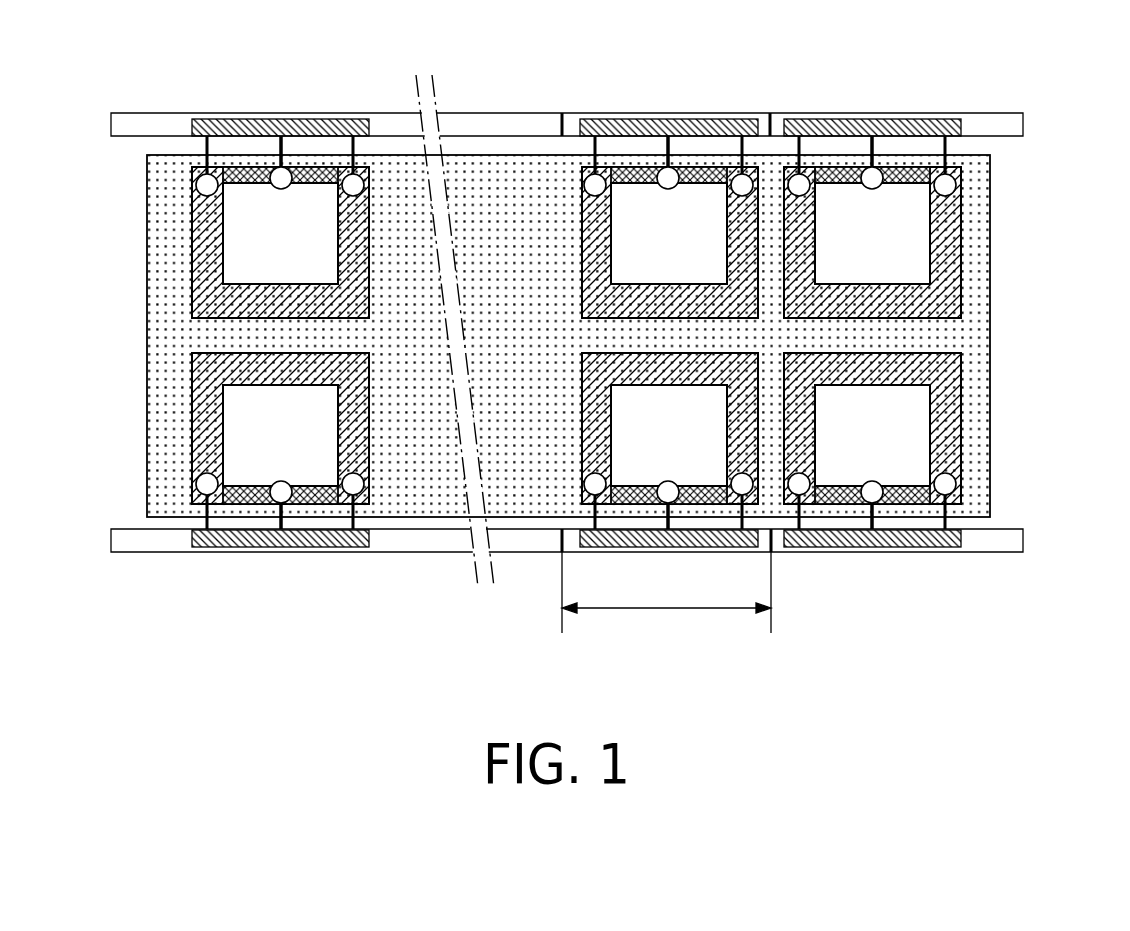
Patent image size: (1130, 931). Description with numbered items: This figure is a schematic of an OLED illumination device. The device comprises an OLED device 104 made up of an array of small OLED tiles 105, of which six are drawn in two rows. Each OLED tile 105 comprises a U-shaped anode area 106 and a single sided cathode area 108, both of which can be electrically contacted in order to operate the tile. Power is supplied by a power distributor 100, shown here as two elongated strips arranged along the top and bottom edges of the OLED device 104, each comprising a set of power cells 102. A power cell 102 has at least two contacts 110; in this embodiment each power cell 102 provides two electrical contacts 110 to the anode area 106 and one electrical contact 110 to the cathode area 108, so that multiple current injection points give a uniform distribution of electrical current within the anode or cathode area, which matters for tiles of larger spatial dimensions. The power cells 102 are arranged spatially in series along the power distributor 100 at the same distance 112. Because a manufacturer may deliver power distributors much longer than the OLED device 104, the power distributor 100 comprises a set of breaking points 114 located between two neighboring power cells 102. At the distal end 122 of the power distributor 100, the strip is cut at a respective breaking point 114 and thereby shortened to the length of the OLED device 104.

The power distributor 100 is at (1023, 127).
The power cell 102 is at (262, 120).
The OLED device 104 is at (990, 333).
The OLED tile 105 is at (157, 263).
The anode area 106 is at (952, 253).
The cathode area 108 is at (850, 246).
The contact 110 is at (952, 184).
The distance 112 is at (666, 592).
The breaking point 114 is at (562, 113).
The distal end 122 is at (111, 127).